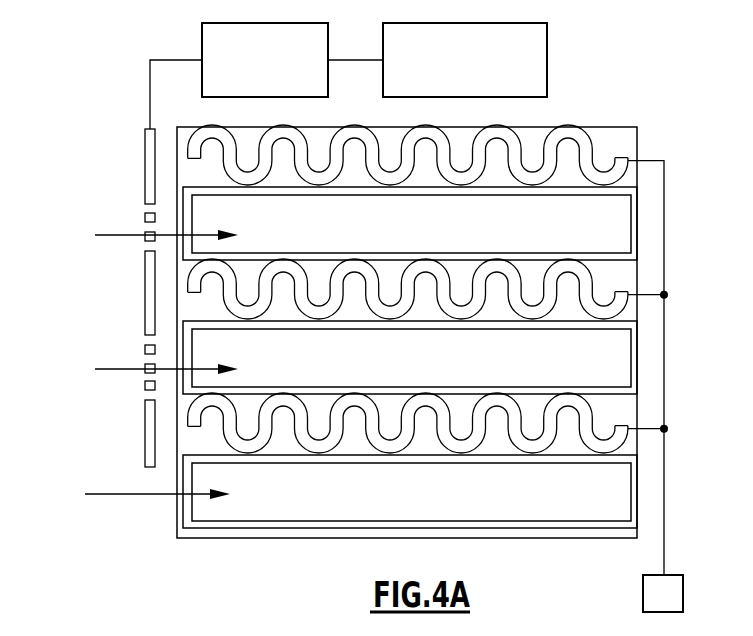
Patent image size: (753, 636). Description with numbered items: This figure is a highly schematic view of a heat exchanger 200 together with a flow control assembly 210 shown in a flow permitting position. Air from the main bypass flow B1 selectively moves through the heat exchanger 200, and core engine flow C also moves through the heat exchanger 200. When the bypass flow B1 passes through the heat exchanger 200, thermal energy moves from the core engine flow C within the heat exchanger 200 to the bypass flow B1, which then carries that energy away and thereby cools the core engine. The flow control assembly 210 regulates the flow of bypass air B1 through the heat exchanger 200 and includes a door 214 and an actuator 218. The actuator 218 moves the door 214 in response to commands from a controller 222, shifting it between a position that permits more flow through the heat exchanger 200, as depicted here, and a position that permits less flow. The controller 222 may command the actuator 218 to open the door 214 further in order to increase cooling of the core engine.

The heat exchanger 200 is at (596, 97).
The flow control assembly 210 is at (115, 451).
The door 214 is at (150, 177).
The actuator 218 is at (245, 88).
The controller 222 is at (445, 88).
The main bypass flow B1 is at (147, 365).
The core engine flow C is at (655, 386).